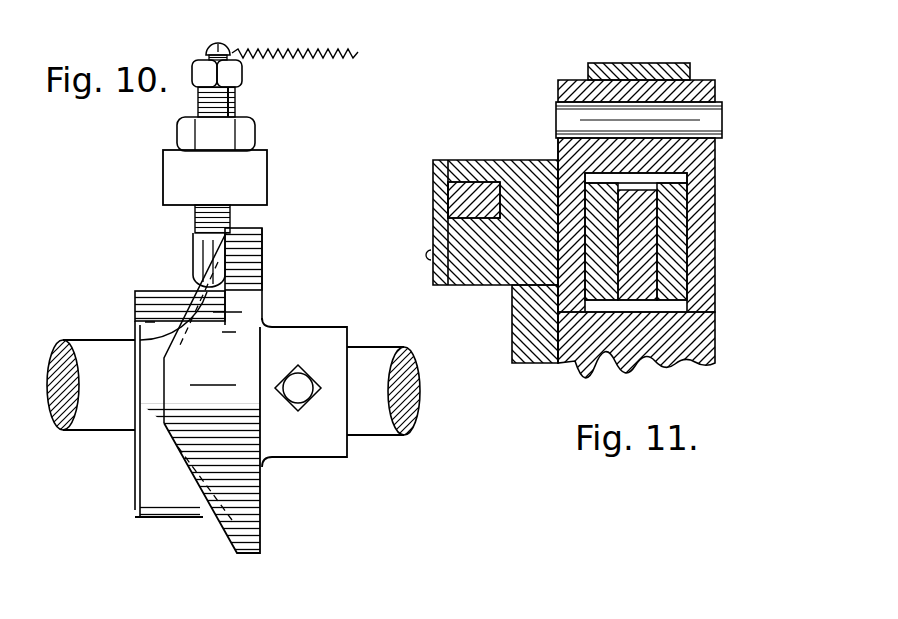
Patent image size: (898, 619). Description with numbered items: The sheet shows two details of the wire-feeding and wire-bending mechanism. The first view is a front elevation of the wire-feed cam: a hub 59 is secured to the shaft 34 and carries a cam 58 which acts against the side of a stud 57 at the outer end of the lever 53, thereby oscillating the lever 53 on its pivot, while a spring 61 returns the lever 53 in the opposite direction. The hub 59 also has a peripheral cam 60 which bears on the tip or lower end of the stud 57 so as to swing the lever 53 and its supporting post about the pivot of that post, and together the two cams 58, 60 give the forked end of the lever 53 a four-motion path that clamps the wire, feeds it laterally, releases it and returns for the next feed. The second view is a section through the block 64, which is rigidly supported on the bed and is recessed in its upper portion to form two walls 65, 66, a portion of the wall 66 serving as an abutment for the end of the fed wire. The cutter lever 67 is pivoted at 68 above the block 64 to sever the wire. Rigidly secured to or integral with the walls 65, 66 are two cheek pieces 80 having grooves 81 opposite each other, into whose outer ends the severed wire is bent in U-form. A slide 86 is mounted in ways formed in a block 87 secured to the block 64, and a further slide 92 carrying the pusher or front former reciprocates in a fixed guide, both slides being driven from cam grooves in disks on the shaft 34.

In FIG. 10, the shaft 34 is at (363, 357).
In FIG. 10, the lever 53 is at (245, 181).
In FIG. 10, the stud 57 is at (195, 256).
In FIG. 10, the cam 58 is at (243, 475).
In FIG. 10, the hub 59 is at (157, 300).
In FIG. 10, the peripheral cam 60 is at (190, 503).
In FIG. 10, the spring 61 is at (338, 55).
In FIG. 11, the block 64 is at (688, 335).
In FIG. 11, the wall 65 is at (702, 167).
In FIG. 11, the wall 66 is at (563, 91).
In FIG. 11, the cutter lever 67 is at (678, 77).
In FIG. 11, the pivot 68 is at (695, 113).
In FIG. 11, the cheek pieces 80 is at (598, 278).
In FIG. 11, the grooves 81 is at (715, 193).
In FIG. 11, the slide 86 is at (462, 197).
In FIG. 11, the block 87 is at (503, 265).
In FIG. 11, the slide 92 is at (640, 282).